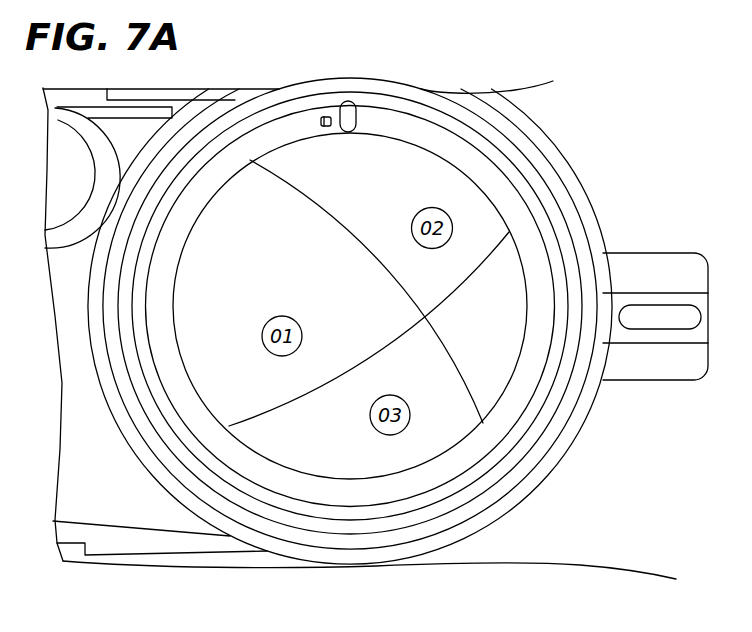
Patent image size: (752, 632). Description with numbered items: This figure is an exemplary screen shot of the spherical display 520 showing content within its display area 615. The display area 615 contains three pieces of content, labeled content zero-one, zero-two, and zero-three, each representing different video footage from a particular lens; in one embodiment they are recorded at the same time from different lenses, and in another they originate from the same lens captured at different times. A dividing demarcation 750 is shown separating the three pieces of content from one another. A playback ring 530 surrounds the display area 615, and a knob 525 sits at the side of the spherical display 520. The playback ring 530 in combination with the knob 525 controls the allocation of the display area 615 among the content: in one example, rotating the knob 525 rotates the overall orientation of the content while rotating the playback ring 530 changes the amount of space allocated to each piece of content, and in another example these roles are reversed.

The spherical display 520 is at (569, 107).
The knob 525 is at (656, 253).
The playback ring 530 is at (306, 127).
The display area 615 is at (303, 463).
The dividing demarcation 750 is at (455, 365).